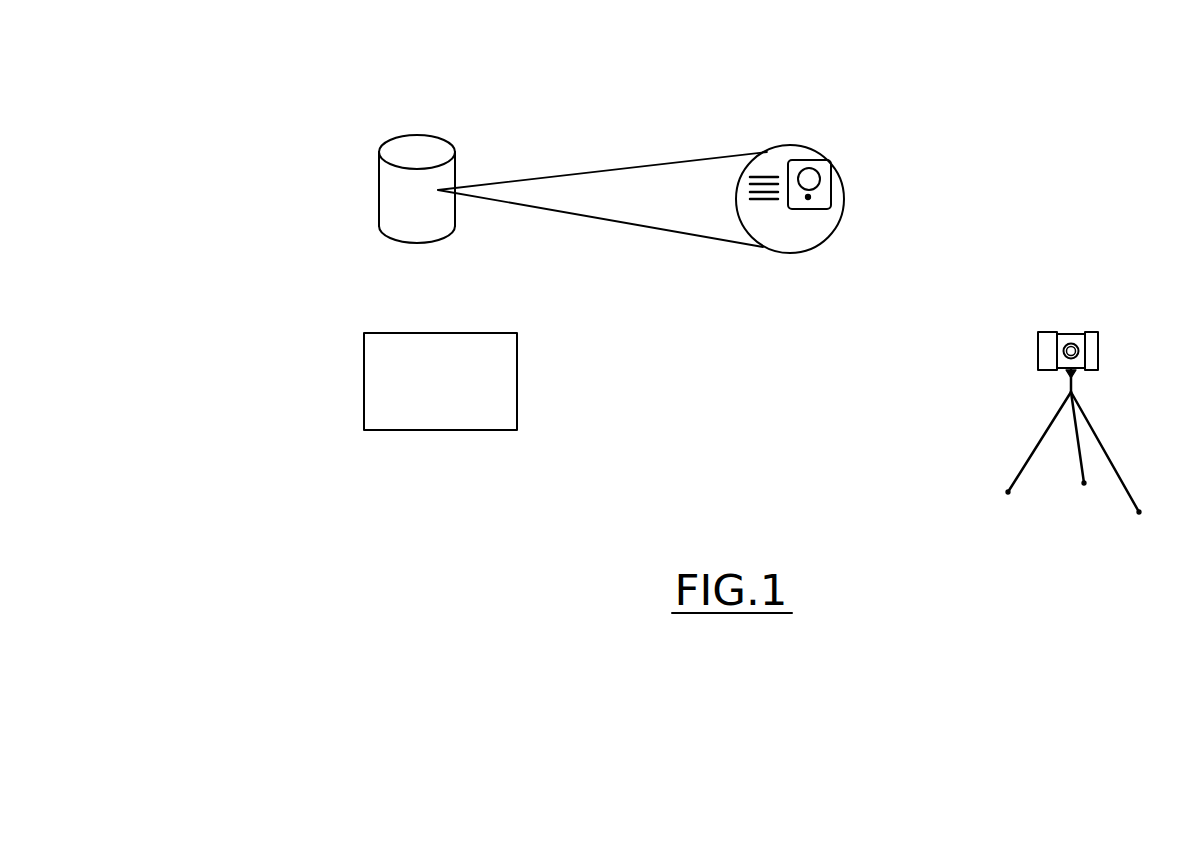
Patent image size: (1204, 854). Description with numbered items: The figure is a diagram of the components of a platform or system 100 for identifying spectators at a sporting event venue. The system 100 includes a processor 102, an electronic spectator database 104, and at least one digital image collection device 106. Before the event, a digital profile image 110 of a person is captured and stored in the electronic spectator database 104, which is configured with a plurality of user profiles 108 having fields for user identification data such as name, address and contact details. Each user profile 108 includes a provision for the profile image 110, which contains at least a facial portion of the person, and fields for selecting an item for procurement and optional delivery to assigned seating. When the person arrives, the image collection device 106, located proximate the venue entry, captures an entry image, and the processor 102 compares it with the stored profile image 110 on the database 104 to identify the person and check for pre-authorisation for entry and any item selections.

The system 100 is at (293, 110).
The processor 102 is at (466, 391).
The electronic spectator database 104 is at (448, 173).
The digital image collection device 106 is at (1048, 352).
The user profile 108 is at (768, 165).
The digital profile image 110 is at (822, 188).